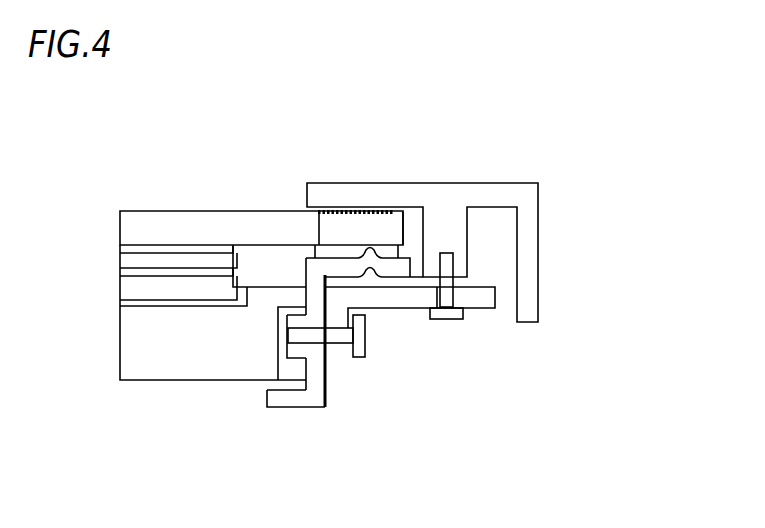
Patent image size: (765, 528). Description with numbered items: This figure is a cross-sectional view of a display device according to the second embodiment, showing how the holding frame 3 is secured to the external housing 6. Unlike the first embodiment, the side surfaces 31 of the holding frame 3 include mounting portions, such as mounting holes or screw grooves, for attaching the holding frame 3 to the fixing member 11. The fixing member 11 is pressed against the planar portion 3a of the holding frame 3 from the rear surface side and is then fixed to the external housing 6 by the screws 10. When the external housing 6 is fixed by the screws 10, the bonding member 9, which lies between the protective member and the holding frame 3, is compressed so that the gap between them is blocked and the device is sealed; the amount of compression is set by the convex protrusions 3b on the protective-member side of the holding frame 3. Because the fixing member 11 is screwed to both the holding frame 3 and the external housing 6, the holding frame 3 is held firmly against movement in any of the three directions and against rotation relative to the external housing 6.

The holding frame 3 is at (272, 400).
The planar portion 3a is at (345, 258).
The convex protrusions 3b is at (375, 253).
The external housing 6 is at (497, 195).
The bonding member 9 is at (325, 253).
The screws 10 is at (360, 350).
The fixing member 11 is at (477, 297).
The side surfaces 31 is at (326, 393).